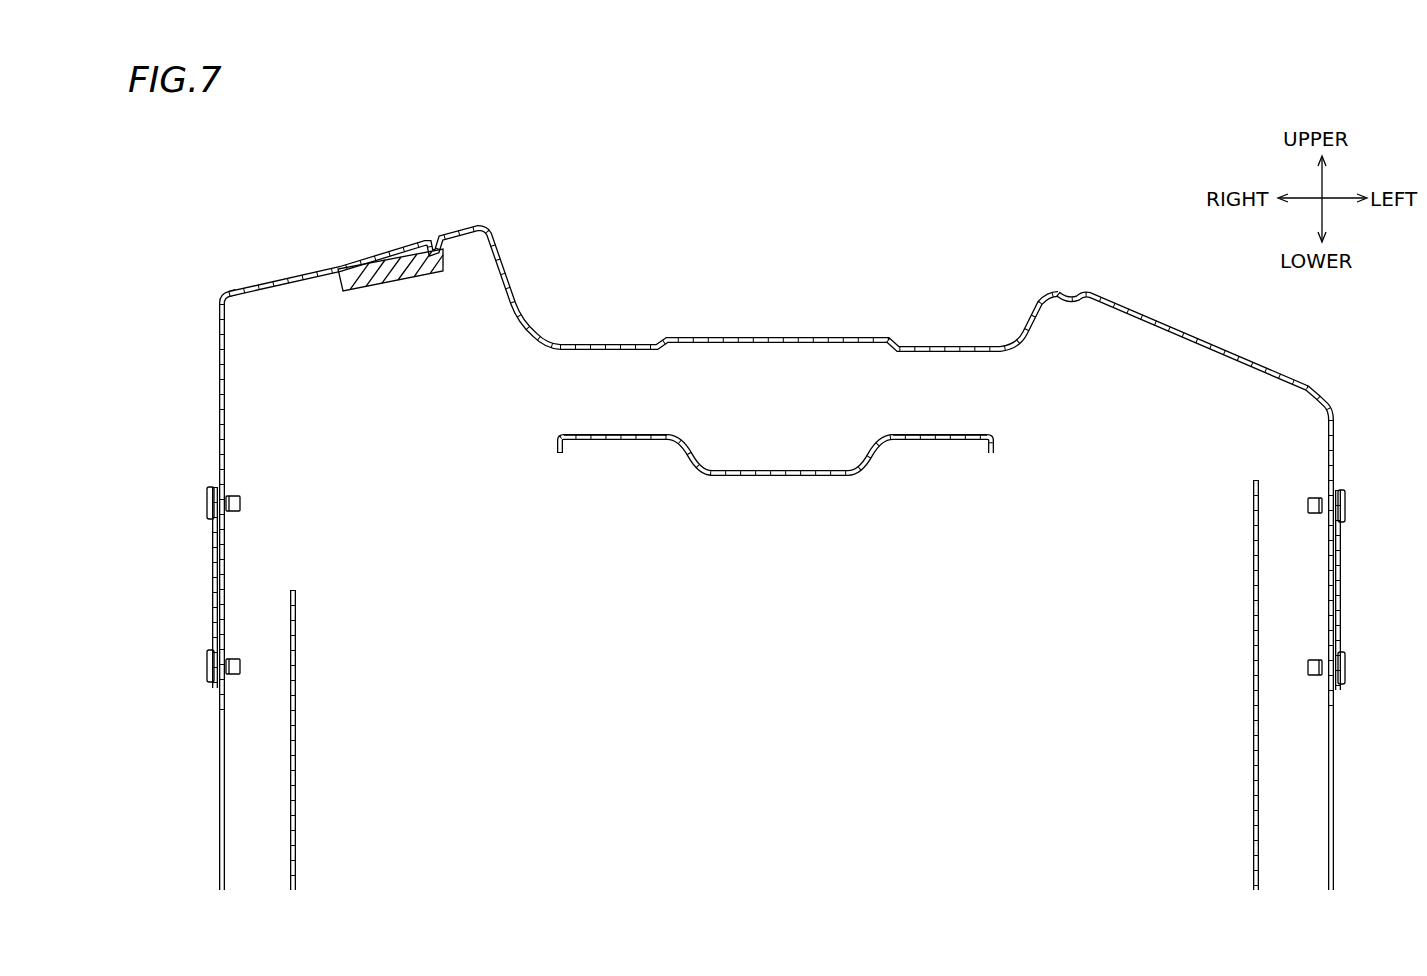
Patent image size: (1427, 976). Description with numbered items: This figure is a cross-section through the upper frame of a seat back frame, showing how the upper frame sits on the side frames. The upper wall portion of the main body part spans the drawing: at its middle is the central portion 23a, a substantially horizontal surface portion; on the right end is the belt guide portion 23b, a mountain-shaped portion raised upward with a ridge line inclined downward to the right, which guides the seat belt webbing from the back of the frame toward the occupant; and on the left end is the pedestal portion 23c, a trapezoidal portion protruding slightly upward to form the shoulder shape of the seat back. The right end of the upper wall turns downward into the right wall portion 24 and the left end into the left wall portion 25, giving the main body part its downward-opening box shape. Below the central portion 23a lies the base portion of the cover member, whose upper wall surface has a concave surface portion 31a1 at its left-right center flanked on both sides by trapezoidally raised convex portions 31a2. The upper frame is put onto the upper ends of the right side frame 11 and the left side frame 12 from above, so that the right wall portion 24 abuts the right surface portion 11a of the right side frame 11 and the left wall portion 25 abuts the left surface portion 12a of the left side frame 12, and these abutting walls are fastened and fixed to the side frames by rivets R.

The right side frame 11 is at (220, 814).
The right surface portion 11a is at (220, 760).
The left side frame 12 is at (1334, 770).
The left surface portion 12a is at (1334, 727).
The central portion 23a is at (783, 337).
The belt guide portion 23b is at (307, 264).
The pedestal portion 23c is at (1195, 322).
The right wall portion 24 is at (219, 400).
The left wall portion 25 is at (1335, 456).
The concave surface portion 31a1 is at (787, 480).
The convex portions 31a2 is at (625, 445).
The rivets R is at (205, 505).